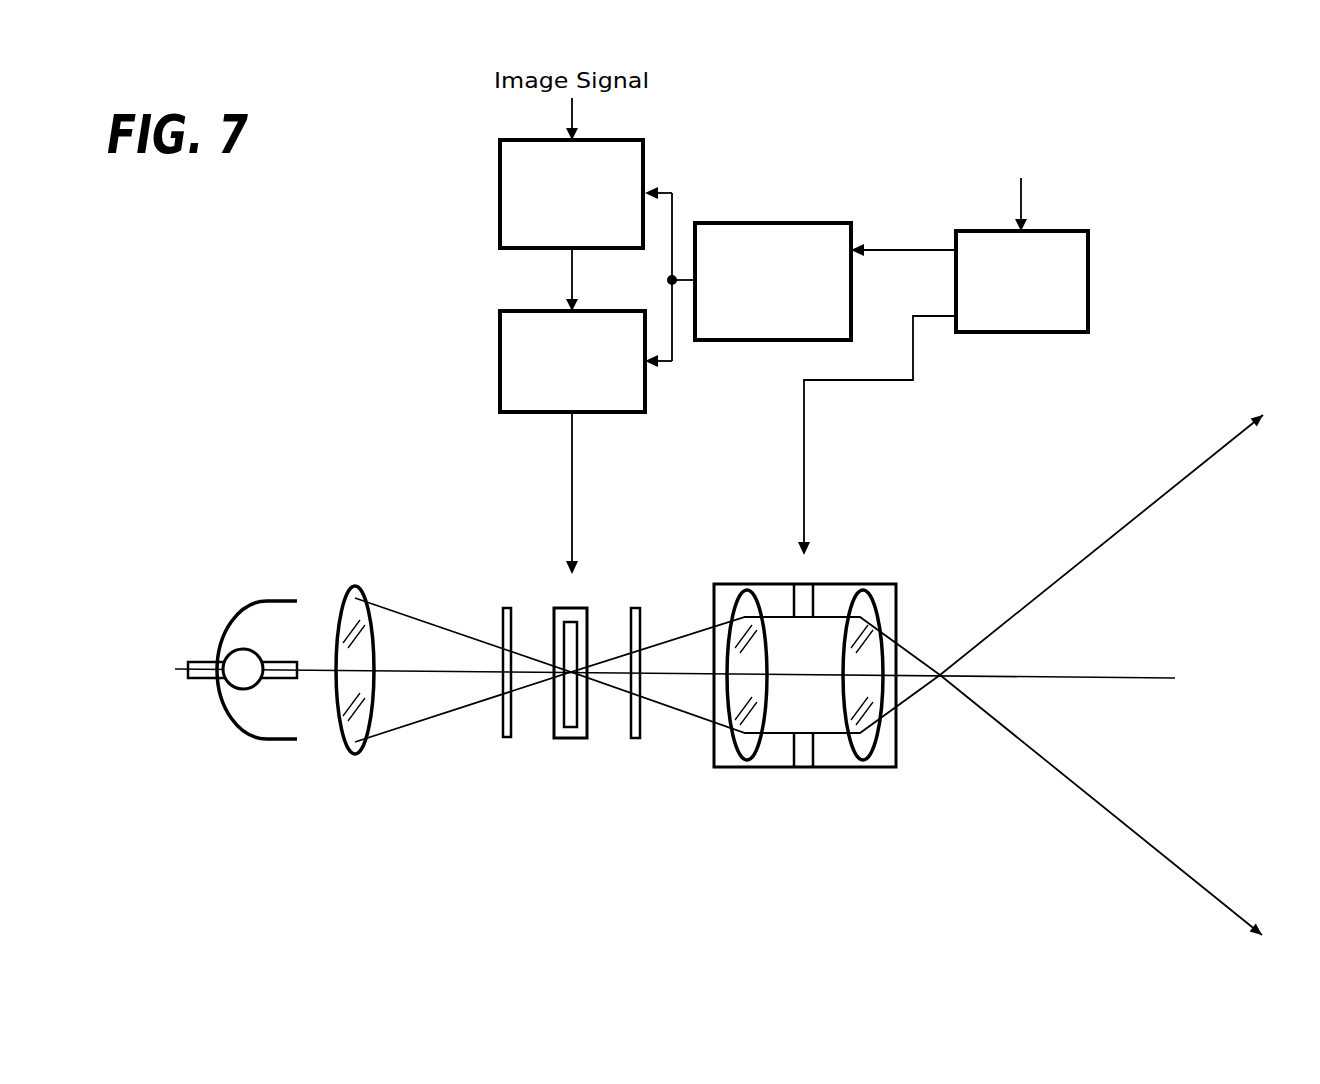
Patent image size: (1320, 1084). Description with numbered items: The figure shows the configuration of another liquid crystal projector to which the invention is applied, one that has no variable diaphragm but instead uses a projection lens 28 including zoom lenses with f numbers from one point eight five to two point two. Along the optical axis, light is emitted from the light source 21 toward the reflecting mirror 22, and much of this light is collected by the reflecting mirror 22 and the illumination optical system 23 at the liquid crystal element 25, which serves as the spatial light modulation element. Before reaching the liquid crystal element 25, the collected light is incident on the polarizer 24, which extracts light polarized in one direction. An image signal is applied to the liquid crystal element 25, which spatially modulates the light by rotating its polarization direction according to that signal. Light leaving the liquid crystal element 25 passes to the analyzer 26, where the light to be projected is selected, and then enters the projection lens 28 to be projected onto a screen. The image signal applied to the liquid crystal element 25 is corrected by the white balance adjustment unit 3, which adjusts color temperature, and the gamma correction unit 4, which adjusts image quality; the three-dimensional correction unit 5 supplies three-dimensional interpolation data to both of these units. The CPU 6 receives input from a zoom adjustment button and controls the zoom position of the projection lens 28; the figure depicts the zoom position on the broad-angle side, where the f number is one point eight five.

The white balance adjustment unit 3 is at (500, 194).
The gamma correction unit 4 is at (500, 362).
The three-dimensional correction unit 5 is at (772, 222).
The CPU 6 is at (1090, 279).
The light source 21 is at (240, 693).
The reflecting mirror 22 is at (271, 742).
The illumination optical system 23 is at (356, 755).
The polarizer 24 is at (508, 740).
The liquid crystal element 25 is at (575, 740).
The analyzer 26 is at (637, 740).
The projection lens 28 is at (845, 582).